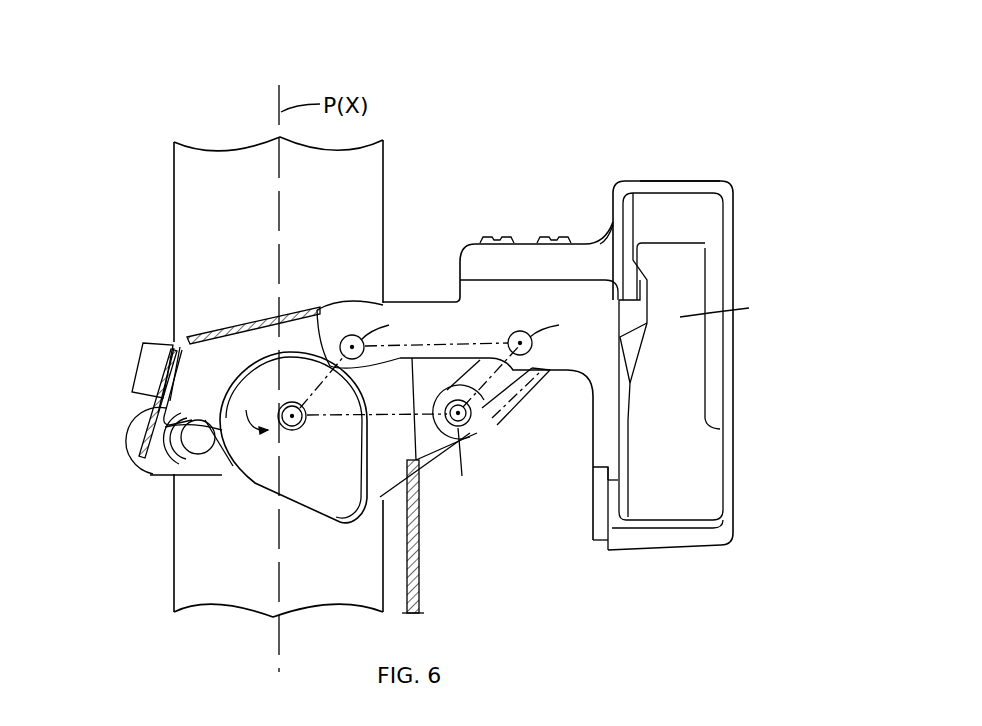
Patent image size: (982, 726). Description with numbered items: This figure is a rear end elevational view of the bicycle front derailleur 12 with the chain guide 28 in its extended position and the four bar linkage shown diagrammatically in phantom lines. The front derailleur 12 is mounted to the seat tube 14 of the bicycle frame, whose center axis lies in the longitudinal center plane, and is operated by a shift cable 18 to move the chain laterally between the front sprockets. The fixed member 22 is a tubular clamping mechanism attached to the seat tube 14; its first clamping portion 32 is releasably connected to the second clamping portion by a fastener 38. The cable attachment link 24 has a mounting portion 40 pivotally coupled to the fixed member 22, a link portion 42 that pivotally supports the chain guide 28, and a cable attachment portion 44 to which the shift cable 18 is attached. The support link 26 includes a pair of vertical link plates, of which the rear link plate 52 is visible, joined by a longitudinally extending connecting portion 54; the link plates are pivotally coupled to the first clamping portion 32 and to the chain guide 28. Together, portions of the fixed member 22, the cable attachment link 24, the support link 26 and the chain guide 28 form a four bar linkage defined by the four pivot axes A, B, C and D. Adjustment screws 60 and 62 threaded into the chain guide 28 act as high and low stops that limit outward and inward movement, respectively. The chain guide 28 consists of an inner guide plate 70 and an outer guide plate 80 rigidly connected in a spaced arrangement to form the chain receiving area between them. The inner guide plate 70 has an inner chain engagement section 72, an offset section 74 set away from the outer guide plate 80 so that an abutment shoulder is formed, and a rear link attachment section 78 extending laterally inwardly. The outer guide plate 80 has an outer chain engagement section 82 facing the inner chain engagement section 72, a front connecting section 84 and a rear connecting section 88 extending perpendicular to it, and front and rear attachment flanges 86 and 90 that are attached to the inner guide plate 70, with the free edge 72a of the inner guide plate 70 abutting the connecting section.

The bicycle front derailleur 12 is at (448, 353).
The seat tube 14 is at (350, 180).
The shift cable 18 is at (225, 332).
The fixed member 22 is at (186, 395).
The cable attachment link 24 is at (312, 521).
The support link 26 is at (479, 462).
The chain guide 28 is at (726, 359).
The first clamping portion 32 is at (140, 429).
The fastener 38 is at (192, 452).
The mounting portion 40 is at (333, 466).
The link portion 42 is at (325, 317).
The cable attachment portion 44 is at (193, 382).
The link plate 52 is at (482, 410).
The connecting portion 54 is at (532, 390).
The adjustment screw 60 is at (487, 235).
The adjustment screw 62 is at (544, 235).
The inner guide plate 70 is at (634, 440).
The inner chain engagement section 72 is at (657, 321).
The free edge 72a is at (630, 187).
The offset section 74 is at (598, 530).
The rear link attachment section 78 is at (500, 376).
The outer guide plate 80 is at (708, 360).
The outer chain engagement section 82 is at (713, 363).
The front connecting section 84 is at (687, 187).
The front attachment flange 86 is at (615, 215).
The rear connecting section 88 is at (690, 532).
The rear attachment flange 90 is at (613, 503).